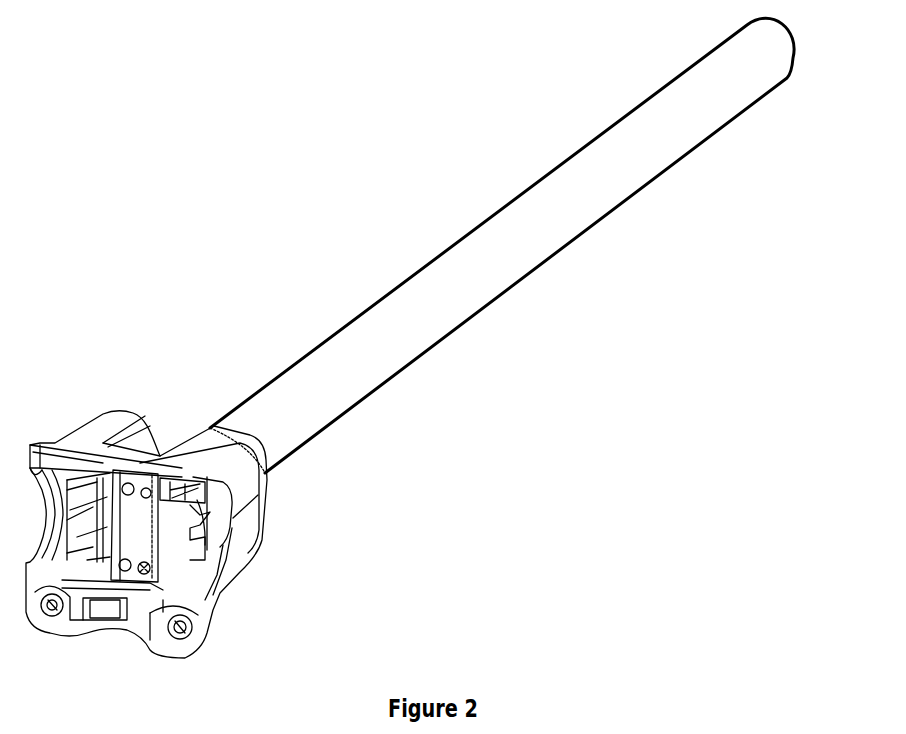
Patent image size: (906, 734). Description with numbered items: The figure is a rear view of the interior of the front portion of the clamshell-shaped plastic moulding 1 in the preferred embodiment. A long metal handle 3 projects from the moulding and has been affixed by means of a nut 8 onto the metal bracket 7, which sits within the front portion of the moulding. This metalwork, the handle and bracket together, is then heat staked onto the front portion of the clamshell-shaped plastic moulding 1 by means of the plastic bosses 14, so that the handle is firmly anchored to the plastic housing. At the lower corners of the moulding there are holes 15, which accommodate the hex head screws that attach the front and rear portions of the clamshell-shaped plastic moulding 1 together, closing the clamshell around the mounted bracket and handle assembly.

The clamshell-shaped plastic moulding 1 is at (171, 474).
The metal handle 3 is at (363, 403).
The metal bracket 7 is at (138, 540).
The nut 8 is at (90, 497).
The plastic bosses 14 is at (150, 562).
The holes 15 is at (192, 627).